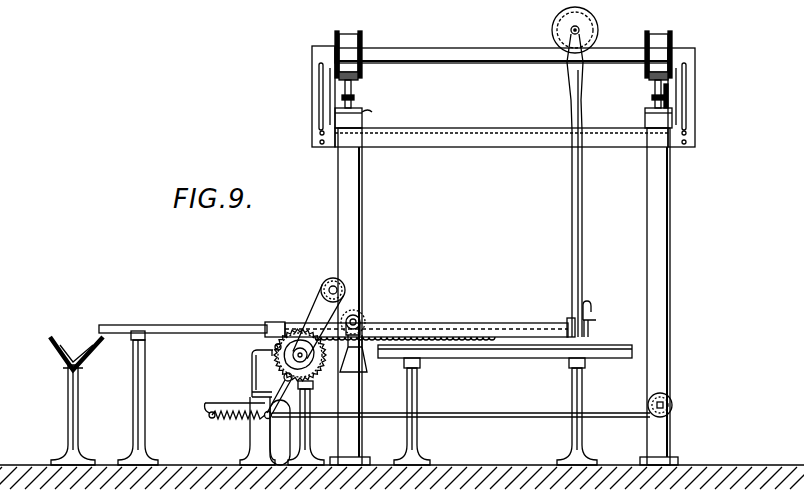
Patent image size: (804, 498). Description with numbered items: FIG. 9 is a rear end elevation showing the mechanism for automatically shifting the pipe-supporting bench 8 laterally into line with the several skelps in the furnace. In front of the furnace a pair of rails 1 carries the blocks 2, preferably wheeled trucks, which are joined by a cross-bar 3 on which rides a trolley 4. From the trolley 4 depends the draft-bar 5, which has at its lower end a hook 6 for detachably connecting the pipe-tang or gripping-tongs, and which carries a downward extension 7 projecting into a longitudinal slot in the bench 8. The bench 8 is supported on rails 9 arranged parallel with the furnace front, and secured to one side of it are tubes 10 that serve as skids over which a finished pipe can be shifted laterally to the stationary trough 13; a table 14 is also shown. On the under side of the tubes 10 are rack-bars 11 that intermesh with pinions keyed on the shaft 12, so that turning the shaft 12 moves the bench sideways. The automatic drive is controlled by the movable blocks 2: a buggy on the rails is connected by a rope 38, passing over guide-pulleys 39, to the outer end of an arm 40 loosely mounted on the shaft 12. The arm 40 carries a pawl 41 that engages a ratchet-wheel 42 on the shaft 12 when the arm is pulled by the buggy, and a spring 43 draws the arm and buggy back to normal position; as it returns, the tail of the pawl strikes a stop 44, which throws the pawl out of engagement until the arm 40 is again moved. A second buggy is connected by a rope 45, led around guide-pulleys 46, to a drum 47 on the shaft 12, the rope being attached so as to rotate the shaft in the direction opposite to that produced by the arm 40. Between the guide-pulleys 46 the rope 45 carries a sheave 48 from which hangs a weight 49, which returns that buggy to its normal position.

The rails 1 is at (357, 84).
The blocks 2 is at (350, 44).
The cross-bar 3 is at (506, 61).
The trolley 4 is at (552, 27).
The draft-bar 5 is at (566, 185).
The hook 6 is at (591, 311).
The downward extension 7 is at (589, 328).
The pipe-supporting bench 8 is at (569, 322).
The rails 9 is at (520, 359).
The tubes 10 is at (478, 323).
The rack-bars 11 is at (422, 332).
The shaft 12 is at (272, 338).
The trough 13 is at (76, 393).
The table 14 is at (179, 325).
The rope 38 is at (670, 248).
The guide-pulleys 39 is at (667, 91).
The arm 40 is at (283, 400).
The pawl 41 is at (310, 380).
The ratchet-wheel 42 is at (297, 347).
The spring 43 is at (225, 419).
The stop 44 is at (253, 373).
The rope 45 is at (362, 220).
The guide-pulleys 46 is at (364, 112).
The drum 47 is at (312, 372).
The sheave 48 is at (364, 318).
The weight 49 is at (360, 360).